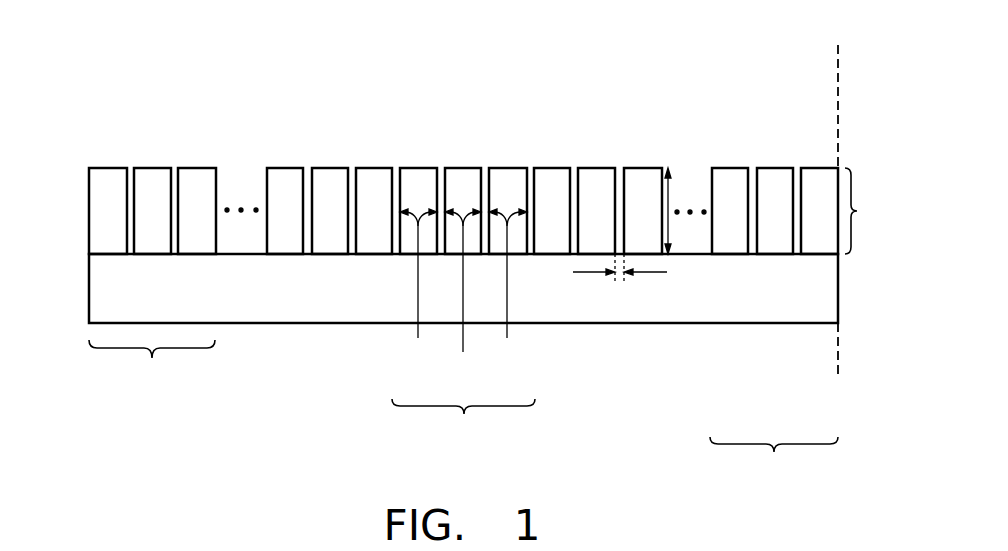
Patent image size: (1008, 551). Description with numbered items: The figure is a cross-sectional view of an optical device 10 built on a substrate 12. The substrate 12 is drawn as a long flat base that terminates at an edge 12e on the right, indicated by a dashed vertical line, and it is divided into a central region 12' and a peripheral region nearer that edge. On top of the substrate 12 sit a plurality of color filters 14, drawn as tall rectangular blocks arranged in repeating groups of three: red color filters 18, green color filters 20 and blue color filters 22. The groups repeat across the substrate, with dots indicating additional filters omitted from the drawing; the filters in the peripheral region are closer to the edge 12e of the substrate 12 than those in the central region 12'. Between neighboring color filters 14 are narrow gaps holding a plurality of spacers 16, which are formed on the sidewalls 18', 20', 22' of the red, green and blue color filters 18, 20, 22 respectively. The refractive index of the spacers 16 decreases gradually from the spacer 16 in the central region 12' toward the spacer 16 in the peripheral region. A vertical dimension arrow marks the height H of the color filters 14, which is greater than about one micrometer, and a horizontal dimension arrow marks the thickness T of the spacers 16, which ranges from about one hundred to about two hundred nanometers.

The optical device 10 is at (30, 41).
The substrate 12 is at (492, 288).
The central region 12' is at (463, 426).
The edge 12e is at (840, 229).
The color filters 14 is at (870, 211).
The spacers 16 is at (130, 243).
The red color filters 18 is at (418, 170).
The green color filters 20 is at (463, 170).
The blue color filters 22 is at (508, 170).
The sidewalls of the red color filters 18' is at (419, 288).
The sidewalls of the green color filters 20' is at (462, 294).
The sidewalls of the blue color filters 22' is at (507, 288).
The height of the color filters H is at (670, 200).
The thickness of the spacers T is at (620, 283).